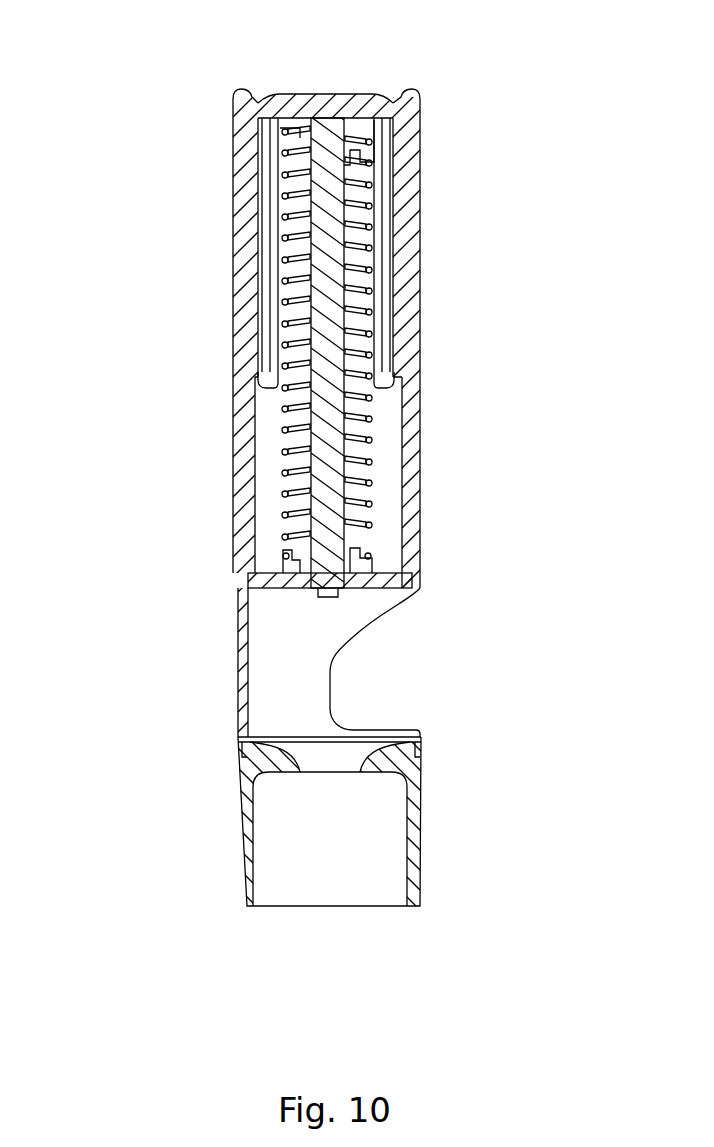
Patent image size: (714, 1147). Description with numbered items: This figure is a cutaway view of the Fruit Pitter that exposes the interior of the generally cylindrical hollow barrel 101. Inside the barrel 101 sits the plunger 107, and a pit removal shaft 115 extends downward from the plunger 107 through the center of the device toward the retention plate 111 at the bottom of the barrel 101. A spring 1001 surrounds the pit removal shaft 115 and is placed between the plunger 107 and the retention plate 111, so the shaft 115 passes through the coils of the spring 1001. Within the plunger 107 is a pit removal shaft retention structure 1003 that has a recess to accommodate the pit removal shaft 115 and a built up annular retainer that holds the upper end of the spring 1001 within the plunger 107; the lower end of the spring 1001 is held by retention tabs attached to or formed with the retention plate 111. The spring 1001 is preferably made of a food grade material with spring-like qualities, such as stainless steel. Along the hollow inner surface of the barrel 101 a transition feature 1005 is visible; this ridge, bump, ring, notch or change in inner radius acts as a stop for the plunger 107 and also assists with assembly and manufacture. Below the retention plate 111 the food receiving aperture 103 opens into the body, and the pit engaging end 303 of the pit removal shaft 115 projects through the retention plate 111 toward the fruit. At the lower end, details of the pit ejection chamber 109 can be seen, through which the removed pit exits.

The generally cylindrical hollow barrel 101 is at (420, 240).
The food receiving aperture 103 is at (395, 640).
The plunger 107 is at (292, 95).
The pit ejection chamber 109 is at (423, 797).
The retention plate 111 is at (268, 587).
The pit removal shaft 115 is at (345, 512).
The pit engaging end 303 is at (317, 593).
The spring 1001 is at (372, 413).
The pit removal shaft retention structure 1003 is at (348, 133).
The transition feature 1005 is at (258, 378).